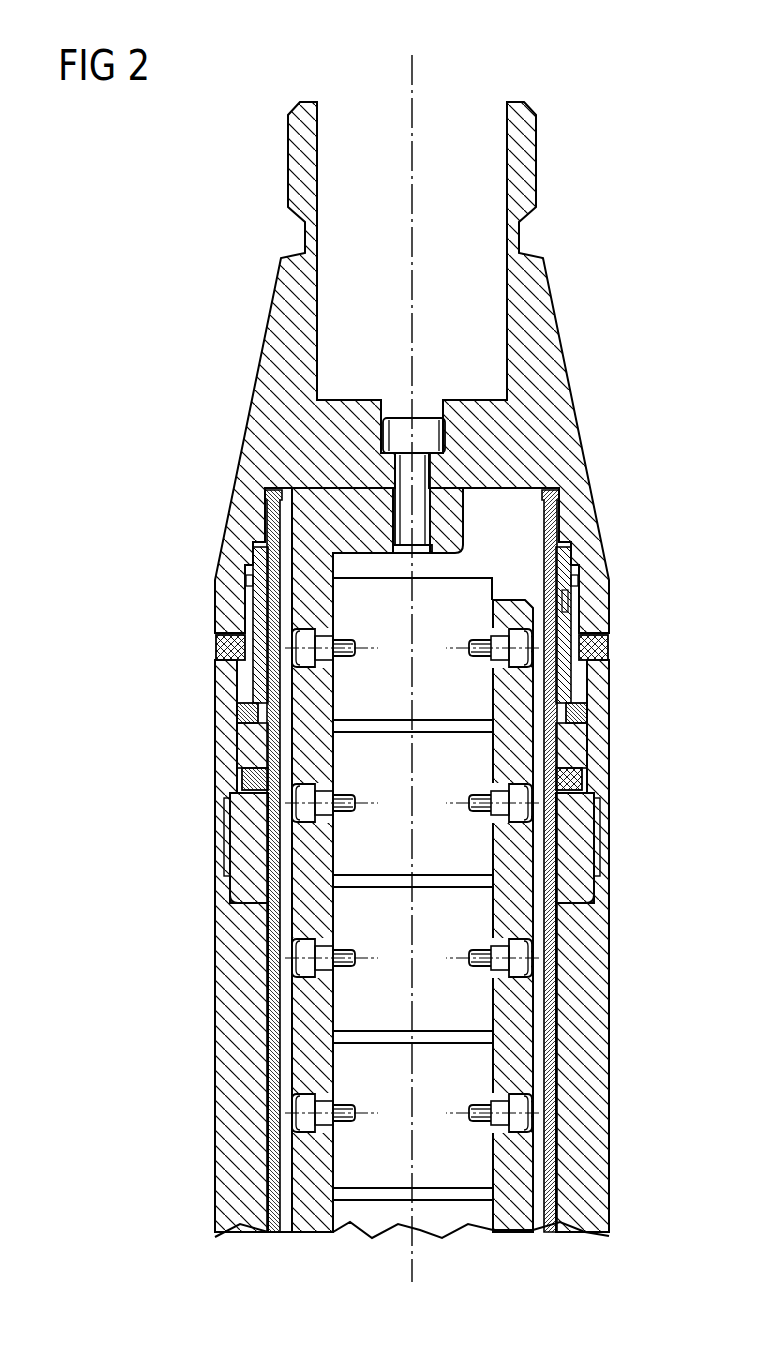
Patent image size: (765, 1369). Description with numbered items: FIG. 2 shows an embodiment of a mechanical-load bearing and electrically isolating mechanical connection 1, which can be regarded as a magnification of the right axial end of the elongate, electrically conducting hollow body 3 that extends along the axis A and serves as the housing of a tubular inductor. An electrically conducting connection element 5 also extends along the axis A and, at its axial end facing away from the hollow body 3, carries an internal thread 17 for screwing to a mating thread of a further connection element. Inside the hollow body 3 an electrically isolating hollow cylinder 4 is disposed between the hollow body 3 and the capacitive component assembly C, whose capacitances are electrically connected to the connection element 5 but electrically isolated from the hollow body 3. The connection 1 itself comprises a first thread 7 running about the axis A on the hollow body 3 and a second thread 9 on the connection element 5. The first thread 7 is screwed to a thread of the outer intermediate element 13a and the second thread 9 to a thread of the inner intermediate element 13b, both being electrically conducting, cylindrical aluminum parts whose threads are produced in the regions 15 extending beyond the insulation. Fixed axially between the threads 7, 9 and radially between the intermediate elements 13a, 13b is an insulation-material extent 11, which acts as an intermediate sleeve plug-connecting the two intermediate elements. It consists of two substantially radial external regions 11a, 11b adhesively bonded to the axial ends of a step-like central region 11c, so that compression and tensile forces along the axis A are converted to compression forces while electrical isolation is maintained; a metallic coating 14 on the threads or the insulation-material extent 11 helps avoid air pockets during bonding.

The mechanical-load bearing and electrically isolating mechanical connection 1 is at (375, 706).
The hollow body 3 is at (226, 1137).
The electrically isolating hollow cylinder 4 is at (275, 1232).
The connection element 5 is at (262, 396).
The first thread 7 is at (226, 862).
The second thread 9 is at (260, 601).
The insulation-material extent 11 is at (226, 650).
The external region 11a is at (580, 778).
The external region 11b is at (606, 648).
The central region 11c is at (586, 712).
The outer intermediate element 13a is at (236, 760).
The inner intermediate element 13b is at (250, 736).
The metallic coating 14 is at (568, 580).
The regions extending therebeyond 15 is at (228, 826).
The internal thread 17 is at (256, 580).
The axis A is at (412, 60).
The capacitive component assembly C is at (352, 1004).